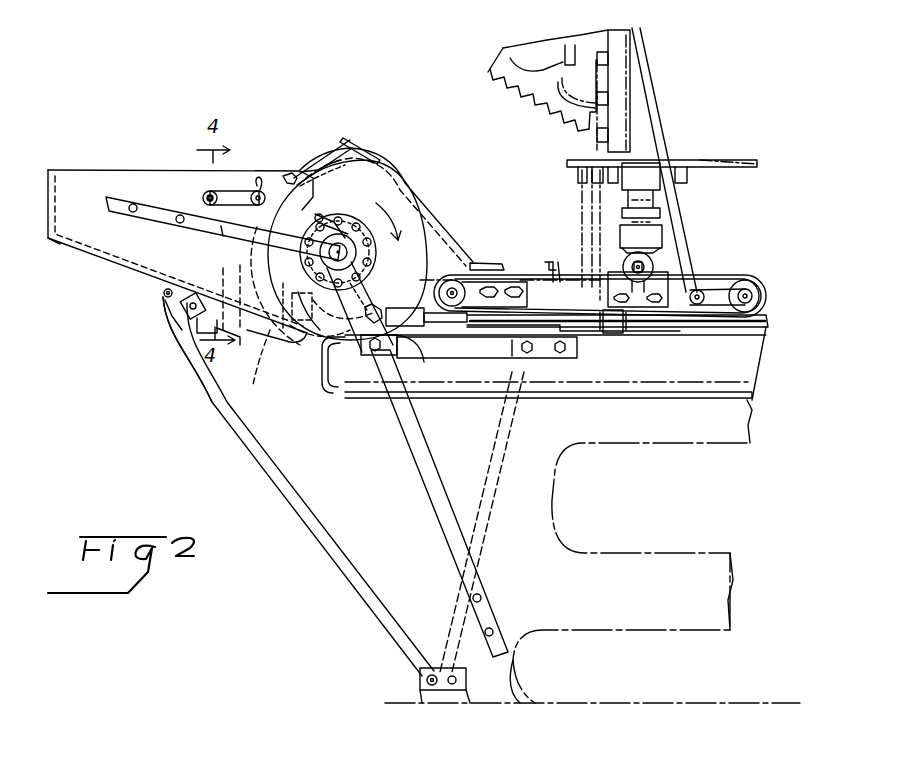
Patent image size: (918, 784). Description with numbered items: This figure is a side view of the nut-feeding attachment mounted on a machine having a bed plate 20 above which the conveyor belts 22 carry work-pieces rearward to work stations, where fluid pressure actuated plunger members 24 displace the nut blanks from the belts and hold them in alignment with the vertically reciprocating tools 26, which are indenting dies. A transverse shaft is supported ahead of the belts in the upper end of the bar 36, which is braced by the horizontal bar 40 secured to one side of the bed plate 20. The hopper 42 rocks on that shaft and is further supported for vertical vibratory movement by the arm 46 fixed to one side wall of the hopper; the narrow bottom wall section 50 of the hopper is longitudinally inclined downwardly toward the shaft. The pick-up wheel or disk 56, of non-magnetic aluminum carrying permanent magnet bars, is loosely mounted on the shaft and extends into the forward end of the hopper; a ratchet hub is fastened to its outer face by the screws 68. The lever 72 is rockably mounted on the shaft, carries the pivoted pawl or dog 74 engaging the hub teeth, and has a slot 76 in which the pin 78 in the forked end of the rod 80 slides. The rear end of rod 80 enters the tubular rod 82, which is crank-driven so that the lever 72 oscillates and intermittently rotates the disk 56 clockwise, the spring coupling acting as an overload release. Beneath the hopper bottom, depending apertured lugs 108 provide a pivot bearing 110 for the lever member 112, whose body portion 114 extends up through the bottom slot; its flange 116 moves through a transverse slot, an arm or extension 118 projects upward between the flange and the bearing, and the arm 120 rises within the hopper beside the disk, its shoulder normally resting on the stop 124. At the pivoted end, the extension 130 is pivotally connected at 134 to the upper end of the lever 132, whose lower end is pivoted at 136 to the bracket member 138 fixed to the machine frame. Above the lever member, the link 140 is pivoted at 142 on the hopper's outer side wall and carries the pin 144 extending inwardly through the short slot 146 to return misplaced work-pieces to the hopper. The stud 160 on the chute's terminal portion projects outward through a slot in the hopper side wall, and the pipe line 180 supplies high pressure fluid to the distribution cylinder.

The bed plate 20 is at (756, 352).
The conveyor belts 22 is at (722, 282).
The plunger members 24 is at (650, 262).
The tools 26 is at (662, 236).
The bar 36 is at (434, 468).
The horizontal bar 40 is at (484, 341).
The hopper 42 is at (93, 178).
The arm 46 is at (174, 232).
The bottom wall section 50 is at (78, 244).
The pick-up wheel or disk 56 is at (420, 200).
The screws 68 is at (372, 258).
The lever 72 is at (403, 338).
The pawl or dog 74 is at (343, 228).
The slot 76 is at (412, 303).
The pin 78 is at (361, 344).
The rod 80 is at (562, 324).
The tubular rod 82 is at (652, 328).
The apertured lugs 108 is at (180, 318).
The pivot bearing 110 is at (190, 360).
The lever member 112 is at (290, 346).
The body portion 114 is at (232, 338).
The flange 116 is at (272, 358).
The arm or extension 118 is at (215, 284).
The arm 120 is at (282, 291).
The stop 124 is at (332, 314).
The extension 130 is at (176, 306).
The lever 132 is at (278, 467).
The pivotal connection 134 is at (160, 293).
The pivotal connection 136 is at (432, 668).
The bracket member 138 is at (466, 680).
The link 140 is at (238, 189).
The pivot 142 is at (207, 189).
The pin 144 is at (307, 160).
The short slot 146 is at (267, 184).
The stud 160 is at (324, 152).
The pipe line 180 is at (530, 395).